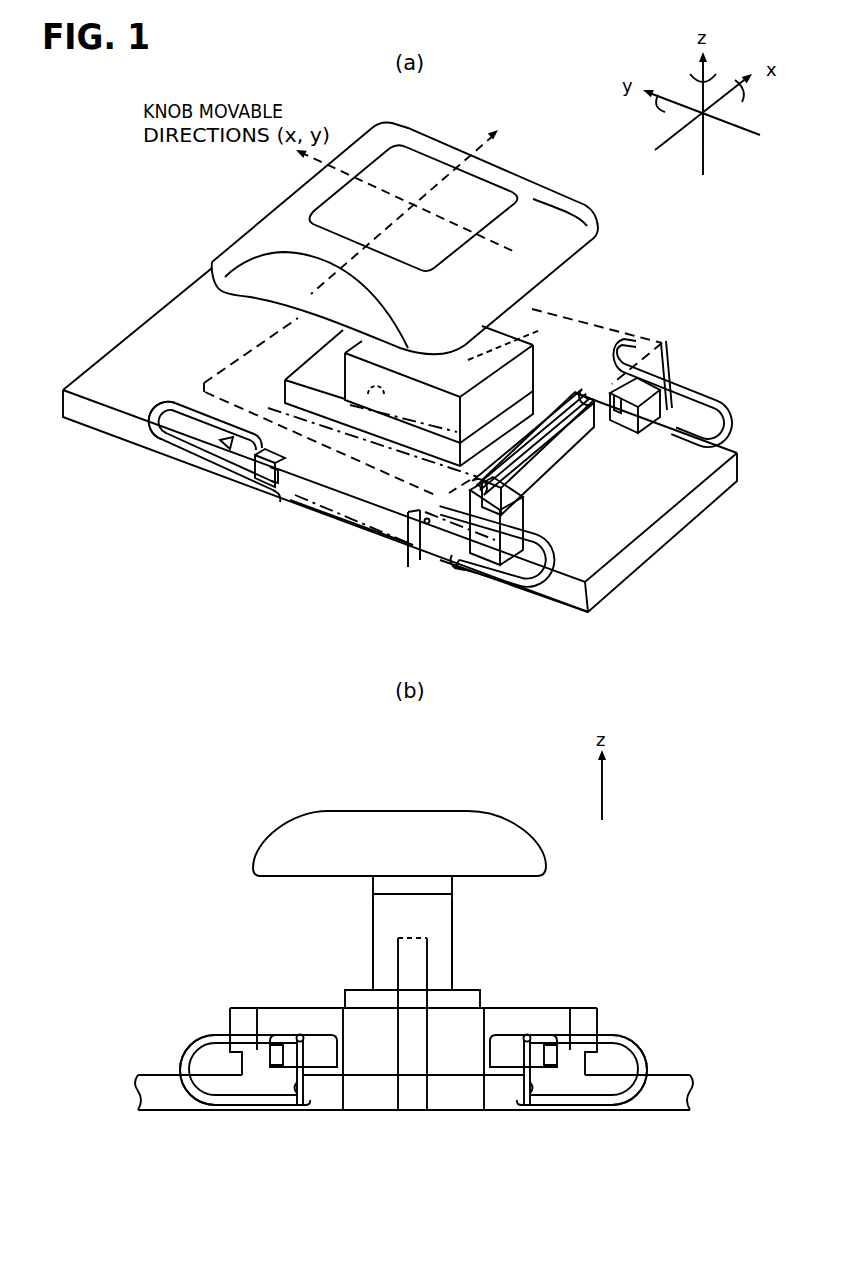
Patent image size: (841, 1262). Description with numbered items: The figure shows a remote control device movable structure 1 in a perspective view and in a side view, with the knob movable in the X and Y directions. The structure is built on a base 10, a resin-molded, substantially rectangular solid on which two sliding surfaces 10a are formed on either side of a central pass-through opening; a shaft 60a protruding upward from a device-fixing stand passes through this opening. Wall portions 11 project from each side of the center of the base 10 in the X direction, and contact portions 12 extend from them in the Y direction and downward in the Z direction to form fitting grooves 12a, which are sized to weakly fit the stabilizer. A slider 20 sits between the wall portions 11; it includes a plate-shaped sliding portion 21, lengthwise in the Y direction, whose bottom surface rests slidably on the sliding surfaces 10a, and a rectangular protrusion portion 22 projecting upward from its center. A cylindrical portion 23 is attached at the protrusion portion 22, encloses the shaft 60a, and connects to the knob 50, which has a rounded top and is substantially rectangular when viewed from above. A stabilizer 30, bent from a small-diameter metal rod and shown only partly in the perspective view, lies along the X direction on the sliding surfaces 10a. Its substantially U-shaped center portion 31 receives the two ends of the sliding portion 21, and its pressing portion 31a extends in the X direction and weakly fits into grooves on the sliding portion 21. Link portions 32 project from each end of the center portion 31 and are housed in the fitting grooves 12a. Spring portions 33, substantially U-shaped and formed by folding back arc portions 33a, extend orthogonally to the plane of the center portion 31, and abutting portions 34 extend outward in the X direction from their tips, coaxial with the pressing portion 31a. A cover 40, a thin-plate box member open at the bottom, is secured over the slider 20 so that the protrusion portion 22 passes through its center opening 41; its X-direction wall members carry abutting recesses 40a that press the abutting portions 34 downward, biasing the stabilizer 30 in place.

The remote control device movable structure 1 is at (547, 131).
The base 10 is at (651, 569).
The sliding surfaces 10a is at (592, 447).
The wall portions 11 is at (374, 553).
The contact portions 12 is at (320, 1113).
The fitting grooves 12a is at (305, 481).
The slider 20 is at (523, 338).
The sliding portion 21 is at (582, 466).
The protrusion portion 22 is at (545, 303).
The cylindrical portion 23 is at (453, 920).
The stabilizer 30 is at (421, 742).
The center portion 31 is at (535, 418).
The pressing portion 31a is at (510, 445).
The link portions 32 is at (282, 503).
The spring portions 33 is at (668, 380).
The arc portions 33a is at (150, 434).
The abutting portions 34 is at (636, 336).
The cover 40 is at (254, 338).
The abutting recesses 40a is at (300, 447).
The center opening 41 is at (379, 400).
The knob 50 is at (574, 199).
The shaft 60a is at (398, 937).